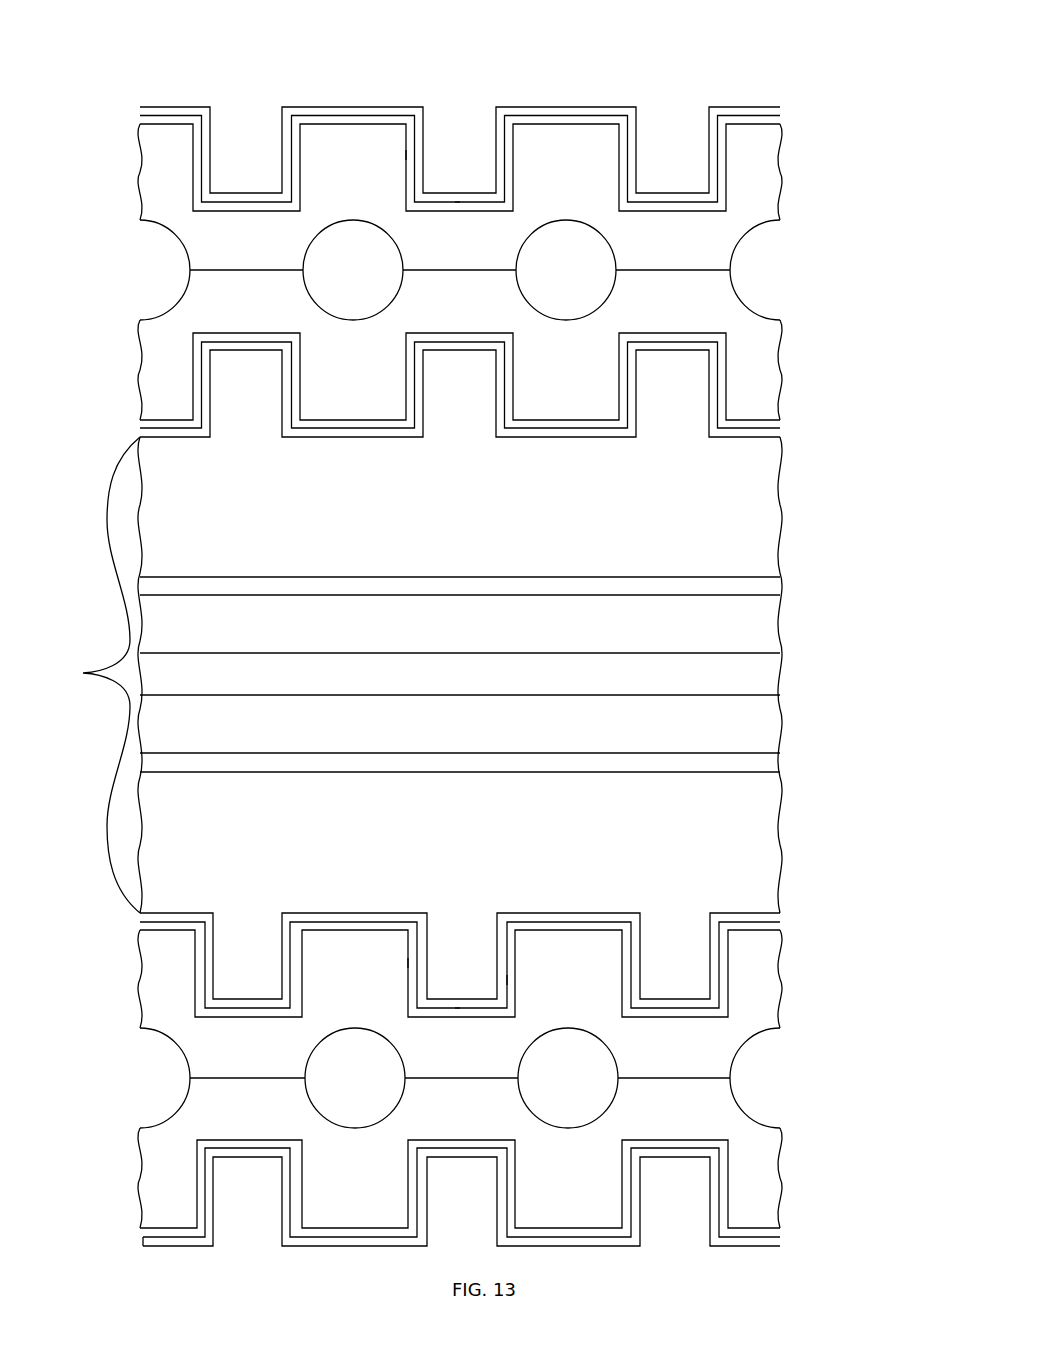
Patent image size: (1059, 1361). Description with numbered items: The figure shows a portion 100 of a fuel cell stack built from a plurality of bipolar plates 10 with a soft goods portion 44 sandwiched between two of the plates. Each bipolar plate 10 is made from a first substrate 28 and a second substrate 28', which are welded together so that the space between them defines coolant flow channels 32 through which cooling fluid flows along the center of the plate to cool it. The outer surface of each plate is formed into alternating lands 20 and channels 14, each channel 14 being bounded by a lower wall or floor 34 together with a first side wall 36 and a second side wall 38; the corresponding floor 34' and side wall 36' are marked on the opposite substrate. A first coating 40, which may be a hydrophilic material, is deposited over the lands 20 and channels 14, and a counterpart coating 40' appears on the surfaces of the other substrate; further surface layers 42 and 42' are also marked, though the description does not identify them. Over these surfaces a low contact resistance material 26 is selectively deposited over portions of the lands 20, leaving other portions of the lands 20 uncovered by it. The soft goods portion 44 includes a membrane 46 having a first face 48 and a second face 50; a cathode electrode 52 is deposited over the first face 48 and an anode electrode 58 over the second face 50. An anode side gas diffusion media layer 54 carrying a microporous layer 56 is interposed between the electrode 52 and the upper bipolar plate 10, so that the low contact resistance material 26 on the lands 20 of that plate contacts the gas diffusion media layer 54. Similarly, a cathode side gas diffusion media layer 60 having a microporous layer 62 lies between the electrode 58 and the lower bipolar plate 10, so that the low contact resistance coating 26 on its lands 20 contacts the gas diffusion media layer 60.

The device 100 is at (801, 47).
The bipolar plate 10 is at (793, 133).
The channel 14 is at (661, 126).
The land 20 is at (163, 96).
The low contact resistance material 26 is at (333, 438).
The first substrate 28 is at (495, 978).
The second substrate 28' is at (497, 676).
The coolant flow channel 32 is at (545, 318).
The lower wall or floor 34 is at (453, 1021).
The trench bottom 34' is at (454, 676).
The first side wall 36 is at (383, 966).
The sidewall 36' is at (379, 671).
The second side wall 38 is at (512, 980).
The first coating 40 is at (460, 937).
The second layer 40' is at (460, 673).
The first layer 42 is at (460, 119).
The first layer 42' is at (461, 1228).
The soft goods portion 44 is at (83, 673).
The membrane 46 is at (767, 672).
The first face 48 is at (618, 656).
The second face 50 is at (546, 694).
The cathode electrode 52 is at (767, 628).
The anode side gas diffusion media layer 54 is at (767, 488).
The microporous layer 56 is at (767, 560).
The anode electrode 58 is at (767, 730).
The cathode side gas diffusion media layer 60 is at (767, 877).
The microporous layer 62 is at (767, 795).